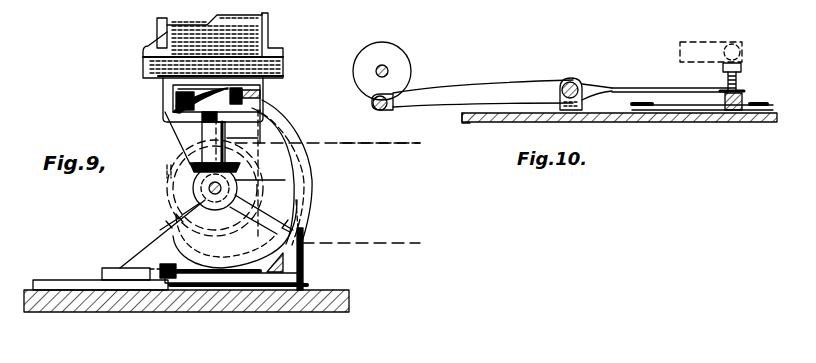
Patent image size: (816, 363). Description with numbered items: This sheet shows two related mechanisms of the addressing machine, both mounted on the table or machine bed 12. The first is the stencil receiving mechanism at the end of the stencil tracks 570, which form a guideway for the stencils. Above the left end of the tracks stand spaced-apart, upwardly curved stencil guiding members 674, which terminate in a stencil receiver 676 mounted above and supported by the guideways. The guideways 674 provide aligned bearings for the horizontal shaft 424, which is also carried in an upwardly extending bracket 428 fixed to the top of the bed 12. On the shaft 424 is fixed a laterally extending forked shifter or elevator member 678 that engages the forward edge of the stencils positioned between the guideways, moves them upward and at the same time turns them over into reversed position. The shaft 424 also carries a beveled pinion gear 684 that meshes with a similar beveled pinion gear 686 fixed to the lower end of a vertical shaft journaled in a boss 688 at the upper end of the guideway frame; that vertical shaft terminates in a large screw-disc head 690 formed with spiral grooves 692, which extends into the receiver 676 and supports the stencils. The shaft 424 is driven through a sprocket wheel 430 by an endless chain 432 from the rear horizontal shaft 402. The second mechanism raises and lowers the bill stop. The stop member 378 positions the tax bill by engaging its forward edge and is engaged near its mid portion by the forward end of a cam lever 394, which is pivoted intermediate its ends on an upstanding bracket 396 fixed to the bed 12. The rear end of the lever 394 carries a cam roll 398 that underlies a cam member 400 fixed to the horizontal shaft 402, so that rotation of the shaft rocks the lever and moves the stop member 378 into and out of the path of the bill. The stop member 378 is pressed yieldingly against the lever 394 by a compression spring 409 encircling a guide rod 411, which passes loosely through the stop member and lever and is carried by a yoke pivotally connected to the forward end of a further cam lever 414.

In FIG. 9, the machine bed 12 is at (350, 297).
In FIG. 10, the machine bed 12 is at (503, 112).
In FIG. 9, the stencil receiver 676 is at (283, 50).
In FIG. 9, the screw-disc head 690 is at (232, 94).
In FIG. 9, the spiral groove 692 is at (170, 105).
In FIG. 9, the boss 688 is at (262, 130).
In FIG. 9, the beveled pinion gear 686 is at (192, 167).
In FIG. 9, the horizontal shaft 424 is at (209, 188).
In FIG. 9, the sprocket wheel 430 is at (176, 200).
In FIG. 9, the upwardly extending bracket 428 is at (140, 248).
In FIG. 9, the beveled pinion gear 684 is at (224, 220).
In FIG. 9, the stencil guiding member 674 is at (311, 196).
In FIG. 9, the forked shifter or elevator member 678 is at (294, 222).
In FIG. 9, the endless chain 432 is at (384, 240).
In FIG. 9, the stencil track 570 is at (288, 271).
In FIG. 10, the cam member 400 is at (408, 68).
In FIG. 10, the horizontal shaft 402 is at (386, 65).
In FIG. 10, the cam roll 398 is at (398, 110).
In FIG. 10, the upstanding bracket 396 is at (572, 80).
In FIG. 10, the cam lever 394 is at (644, 87).
In FIG. 10, the stop member 378 is at (738, 86).
In FIG. 10, the compression spring 409 is at (740, 68).
In FIG. 10, the guide rod 411 is at (744, 51).
In FIG. 10, the cam lever 414 is at (708, 46).